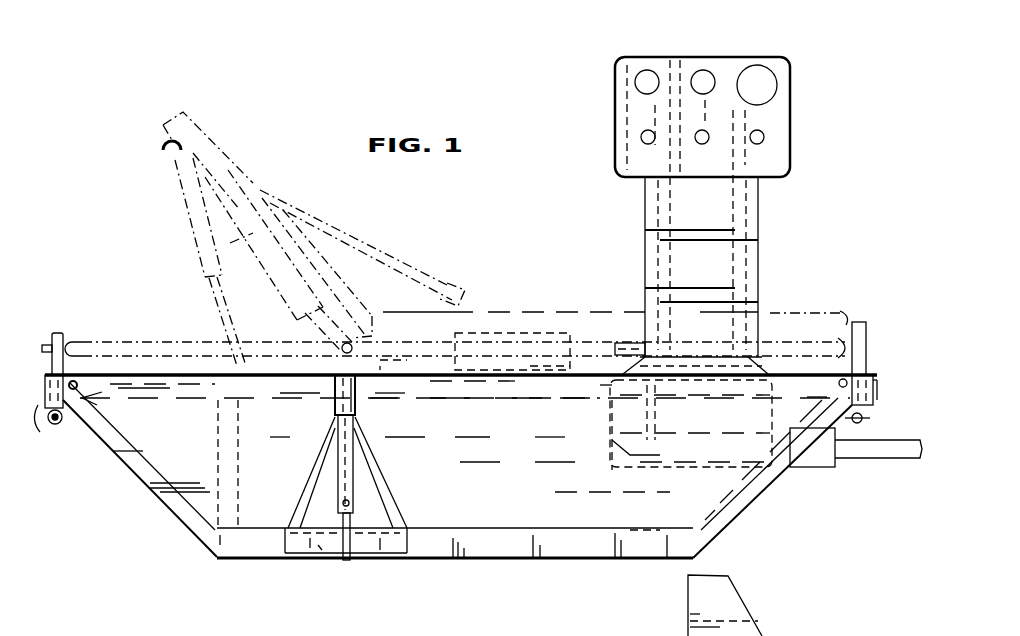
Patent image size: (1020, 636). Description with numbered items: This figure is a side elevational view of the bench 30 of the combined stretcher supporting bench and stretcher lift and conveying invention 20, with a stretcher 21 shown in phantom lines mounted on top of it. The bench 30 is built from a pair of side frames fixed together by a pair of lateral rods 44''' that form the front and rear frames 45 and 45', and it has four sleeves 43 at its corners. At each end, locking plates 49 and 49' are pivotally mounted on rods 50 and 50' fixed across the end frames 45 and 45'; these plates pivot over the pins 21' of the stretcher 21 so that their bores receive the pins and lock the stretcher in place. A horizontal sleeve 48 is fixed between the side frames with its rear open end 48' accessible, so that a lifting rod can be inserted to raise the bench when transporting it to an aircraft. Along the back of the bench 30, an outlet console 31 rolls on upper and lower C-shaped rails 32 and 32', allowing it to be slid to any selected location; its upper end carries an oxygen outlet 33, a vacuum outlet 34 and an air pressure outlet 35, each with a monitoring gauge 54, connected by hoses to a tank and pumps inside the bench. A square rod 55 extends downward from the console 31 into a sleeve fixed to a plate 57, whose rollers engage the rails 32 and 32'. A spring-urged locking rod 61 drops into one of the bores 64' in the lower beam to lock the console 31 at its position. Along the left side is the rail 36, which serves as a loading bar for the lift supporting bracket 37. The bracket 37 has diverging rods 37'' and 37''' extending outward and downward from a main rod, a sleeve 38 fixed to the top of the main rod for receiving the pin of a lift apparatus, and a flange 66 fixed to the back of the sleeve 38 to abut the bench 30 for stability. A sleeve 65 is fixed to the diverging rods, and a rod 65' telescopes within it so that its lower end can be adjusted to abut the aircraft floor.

The combined stretcher supporting bench and stretcher lift and conveying invention 20 is at (558, 303).
The stretcher 21 is at (455, 318).
The pin of the stretcher 21' is at (484, 323).
The bench 30 is at (755, 502).
The outlet console 31 is at (792, 159).
The rail 32 is at (485, 412).
The rail 32' is at (565, 490).
The oxygen outlet 33 is at (641, 138).
The vacuum outlet 34 is at (697, 143).
The air pressure outlet 35 is at (764, 137).
The rail 36 is at (493, 562).
The lift supporting bracket 37 is at (324, 563).
The diverging rod 37'' is at (296, 472).
The diverging rod 37''' is at (414, 472).
The sleeve 38 is at (358, 400).
The sleeve 43 is at (48, 420).
The lateral rod 44''' is at (160, 459).
The front frame 45 is at (140, 470).
The rear frame 45' is at (772, 477).
The horizontal sleeve 48 is at (821, 462).
The rear open end 48' is at (878, 467).
The locking plate 49 is at (91, 331).
The locking plate 49' is at (870, 324).
The rod 50 is at (103, 411).
The rod 50' is at (880, 404).
The monitoring gauge 54 is at (715, 68).
The rod 55 is at (763, 258).
The plate 57 is at (624, 447).
The locking rod 61 is at (633, 342).
The bore 64' is at (691, 423).
The sleeve 65 is at (381, 464).
The rod 65' is at (379, 550).
The flange 66 is at (354, 497).